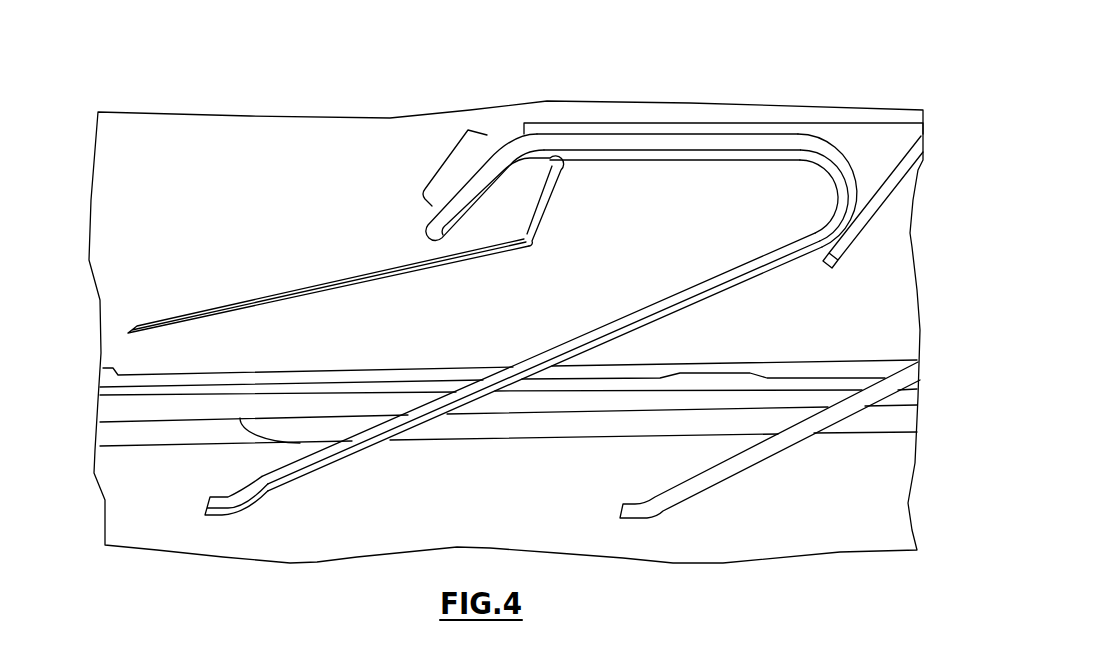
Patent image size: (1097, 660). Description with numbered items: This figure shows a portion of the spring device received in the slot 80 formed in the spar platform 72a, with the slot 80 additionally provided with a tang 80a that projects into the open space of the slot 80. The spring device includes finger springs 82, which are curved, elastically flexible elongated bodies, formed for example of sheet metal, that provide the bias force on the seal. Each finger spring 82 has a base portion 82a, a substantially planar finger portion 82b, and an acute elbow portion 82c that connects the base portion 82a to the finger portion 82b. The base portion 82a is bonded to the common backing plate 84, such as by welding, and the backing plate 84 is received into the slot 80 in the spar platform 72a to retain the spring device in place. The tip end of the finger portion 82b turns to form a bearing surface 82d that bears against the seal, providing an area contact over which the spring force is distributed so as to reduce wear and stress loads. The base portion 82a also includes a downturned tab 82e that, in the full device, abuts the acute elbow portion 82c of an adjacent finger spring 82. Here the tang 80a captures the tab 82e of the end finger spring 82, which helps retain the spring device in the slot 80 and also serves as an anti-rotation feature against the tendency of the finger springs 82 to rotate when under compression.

The spar platform 72a is at (233, 140).
The slot 80 is at (302, 265).
The tang 80a is at (493, 213).
The finger spring 82 is at (561, 338).
The base portion 82a is at (703, 140).
The finger portion 82b is at (615, 321).
The acute elbow portion 82c is at (850, 175).
The bearing surface 82d is at (221, 516).
The downturned tab 82e is at (445, 160).
The backing plate 84 is at (641, 123).